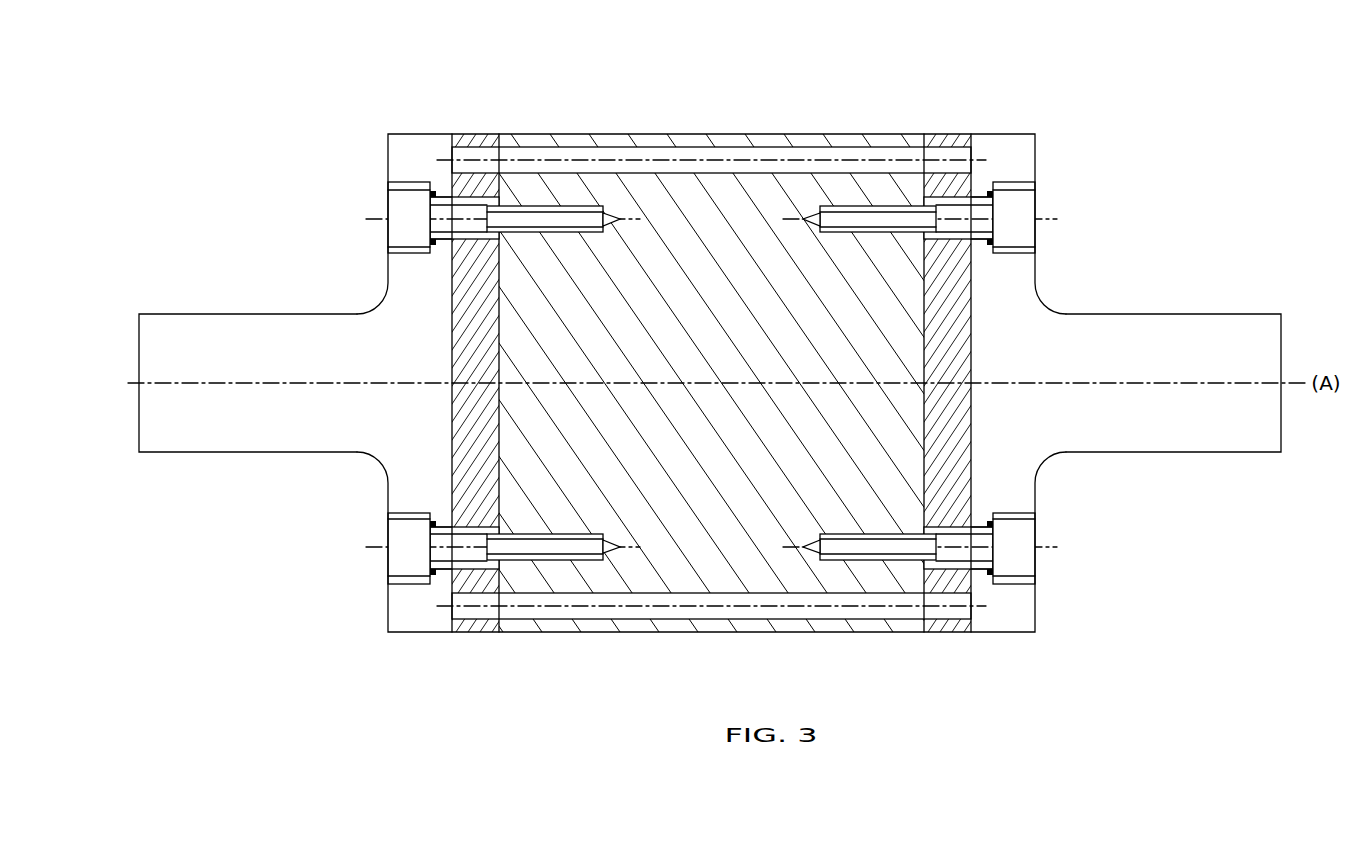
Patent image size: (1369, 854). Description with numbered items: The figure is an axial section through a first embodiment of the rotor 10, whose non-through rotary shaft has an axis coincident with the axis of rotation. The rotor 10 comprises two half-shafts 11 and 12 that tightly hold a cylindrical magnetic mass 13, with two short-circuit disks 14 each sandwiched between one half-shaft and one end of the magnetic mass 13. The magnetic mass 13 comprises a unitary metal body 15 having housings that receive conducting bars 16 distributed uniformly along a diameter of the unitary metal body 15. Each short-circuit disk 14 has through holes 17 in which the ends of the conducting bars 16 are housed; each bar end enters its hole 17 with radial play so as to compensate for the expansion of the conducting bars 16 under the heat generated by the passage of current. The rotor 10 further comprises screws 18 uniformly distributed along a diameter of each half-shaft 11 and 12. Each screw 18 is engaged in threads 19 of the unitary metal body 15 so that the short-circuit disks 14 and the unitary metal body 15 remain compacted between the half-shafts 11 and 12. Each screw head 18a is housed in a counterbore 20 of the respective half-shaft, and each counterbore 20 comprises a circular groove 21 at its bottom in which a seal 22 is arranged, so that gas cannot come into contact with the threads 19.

The rotor 10 is at (830, 44).
The half-shaft 11 is at (277, 292).
The half-shaft 12 is at (1177, 303).
The cylindrical magnetic mass 13 is at (682, 125).
The short-circuit disk 14 is at (488, 122).
The unitary metal body 15 is at (687, 577).
The conducting bar 16 is at (565, 147).
The through hole 17 is at (472, 139).
The screw 18 is at (455, 212).
The screw head 18a is at (400, 200).
The thread 19 is at (578, 204).
The counterbore 20 is at (405, 182).
The circular groove 21 is at (437, 250).
The seal 22 is at (433, 246).